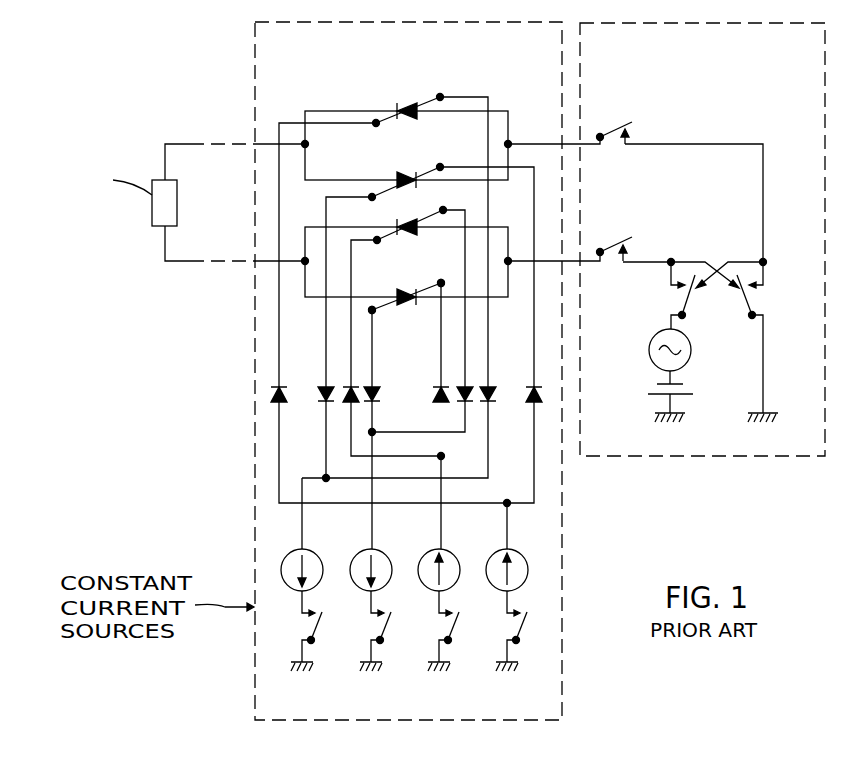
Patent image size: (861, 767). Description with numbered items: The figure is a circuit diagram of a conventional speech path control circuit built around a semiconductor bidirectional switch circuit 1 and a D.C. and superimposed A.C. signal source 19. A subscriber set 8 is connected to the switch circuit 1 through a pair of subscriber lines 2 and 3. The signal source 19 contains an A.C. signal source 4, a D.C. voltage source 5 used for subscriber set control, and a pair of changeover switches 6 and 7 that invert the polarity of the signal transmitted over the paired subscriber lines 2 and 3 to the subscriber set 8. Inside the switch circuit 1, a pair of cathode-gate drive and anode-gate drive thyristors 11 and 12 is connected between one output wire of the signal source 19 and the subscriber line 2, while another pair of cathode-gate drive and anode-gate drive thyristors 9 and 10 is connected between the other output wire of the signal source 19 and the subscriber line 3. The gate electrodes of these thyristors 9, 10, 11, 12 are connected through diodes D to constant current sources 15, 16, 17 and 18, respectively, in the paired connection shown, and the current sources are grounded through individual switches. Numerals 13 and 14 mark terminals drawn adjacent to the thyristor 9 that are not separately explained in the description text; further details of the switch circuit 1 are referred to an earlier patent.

The bidirectional switch circuit 1 is at (282, 721).
The subscriber line 2 is at (245, 149).
The subscriber line 3 is at (240, 265).
The A.C. signal source 4 is at (648, 351).
The D.C. voltage source 5 is at (650, 389).
The changeover switch 6 is at (678, 293).
The changeover switch 7 is at (755, 293).
The subscriber set 8 is at (155, 227).
The thyristor 9 is at (403, 304).
The thyristor 10 is at (399, 237).
The thyristor 11 is at (415, 171).
The thyristor 12 is at (405, 104).
The control terminal of diode 9 13 is at (419, 282).
The control terminal of diode 9 14 is at (383, 304).
The constant current source 15 is at (314, 552).
The constant current source 16 is at (385, 552).
The constant current source 17 is at (455, 552).
The constant current source 18 is at (519, 552).
The D.C. and superimposed A.C. signal source 19 is at (666, 263).
The diodes D is at (243, 390).